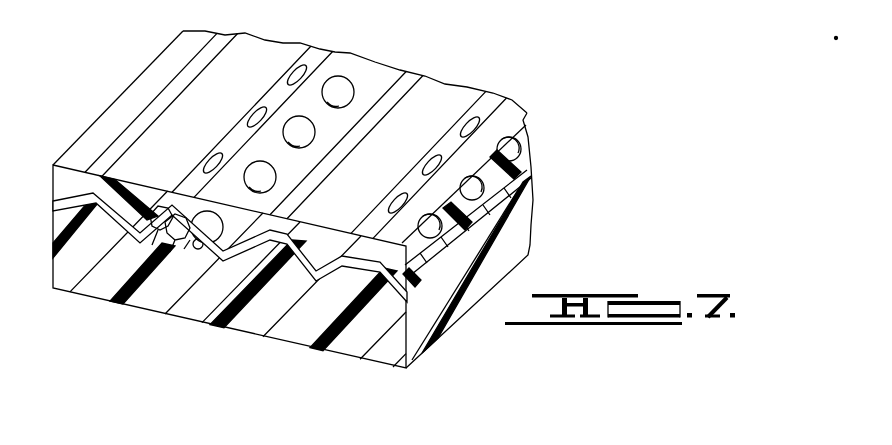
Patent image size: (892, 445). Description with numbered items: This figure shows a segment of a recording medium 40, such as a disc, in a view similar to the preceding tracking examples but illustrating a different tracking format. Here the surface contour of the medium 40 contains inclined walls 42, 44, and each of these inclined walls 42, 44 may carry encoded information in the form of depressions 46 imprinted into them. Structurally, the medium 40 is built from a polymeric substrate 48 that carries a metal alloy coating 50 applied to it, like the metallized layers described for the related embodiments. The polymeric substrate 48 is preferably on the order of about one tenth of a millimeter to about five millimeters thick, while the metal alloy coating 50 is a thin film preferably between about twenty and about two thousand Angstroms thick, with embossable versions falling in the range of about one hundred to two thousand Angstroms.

The medium 40 is at (328, 199).
The inclined wall 42 is at (300, 240).
The inclined wall 44 is at (214, 246).
The depressions 46 is at (150, 247).
The polymeric substrate 48 is at (525, 212).
The metal alloy coating 50 is at (528, 173).